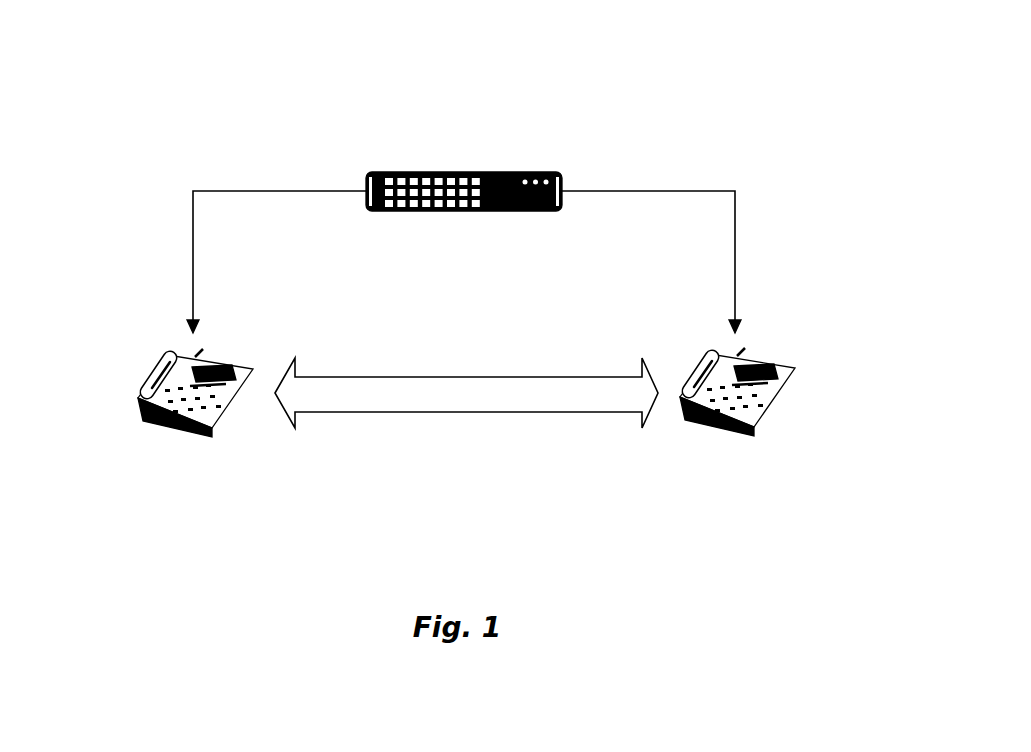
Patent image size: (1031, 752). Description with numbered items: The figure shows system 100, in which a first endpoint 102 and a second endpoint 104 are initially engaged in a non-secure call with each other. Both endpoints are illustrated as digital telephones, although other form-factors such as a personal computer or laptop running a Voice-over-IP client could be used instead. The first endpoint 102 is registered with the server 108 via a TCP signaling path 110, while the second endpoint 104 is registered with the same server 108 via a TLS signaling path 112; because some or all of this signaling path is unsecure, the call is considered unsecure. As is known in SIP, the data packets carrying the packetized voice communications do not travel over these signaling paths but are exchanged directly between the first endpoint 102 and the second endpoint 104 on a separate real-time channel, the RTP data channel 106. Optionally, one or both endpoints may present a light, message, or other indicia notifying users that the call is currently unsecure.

The system 100 is at (935, 68).
The first endpoint 102 is at (232, 362).
The second endpoint 104 is at (798, 378).
The RTP data channel 106 is at (552, 376).
The server 108 is at (535, 172).
The TCP signaling path 110 is at (230, 191).
The TLS signaling path 112 is at (710, 191).